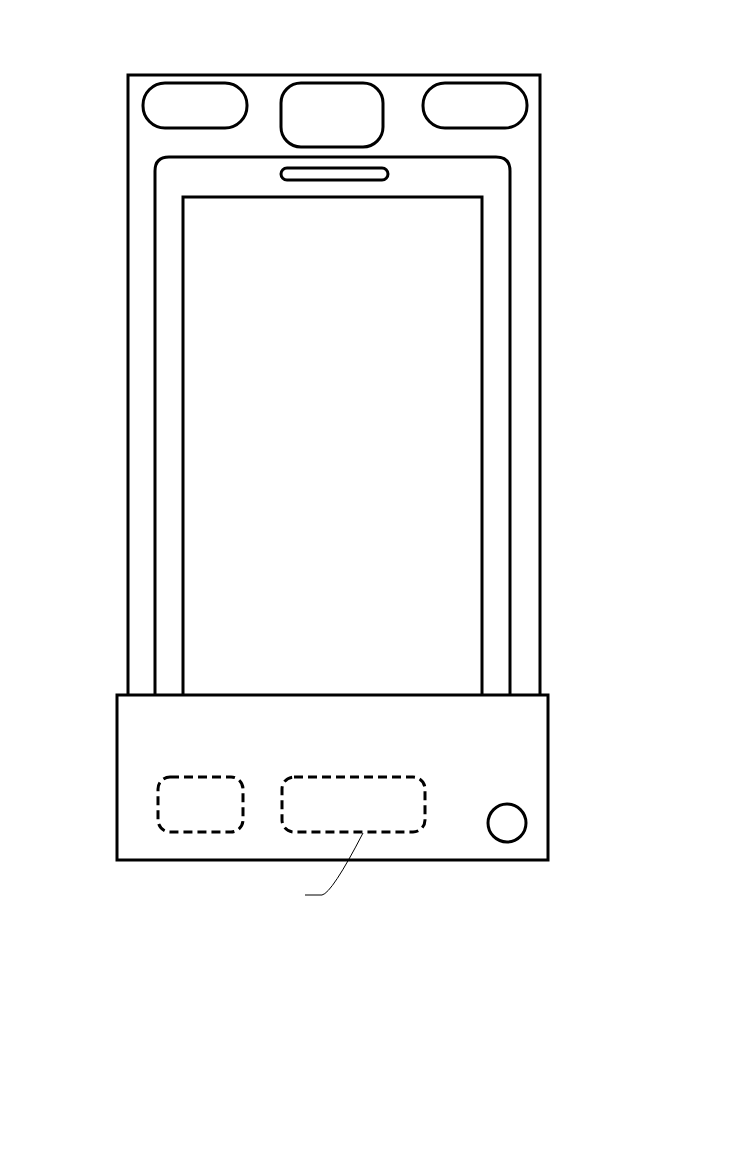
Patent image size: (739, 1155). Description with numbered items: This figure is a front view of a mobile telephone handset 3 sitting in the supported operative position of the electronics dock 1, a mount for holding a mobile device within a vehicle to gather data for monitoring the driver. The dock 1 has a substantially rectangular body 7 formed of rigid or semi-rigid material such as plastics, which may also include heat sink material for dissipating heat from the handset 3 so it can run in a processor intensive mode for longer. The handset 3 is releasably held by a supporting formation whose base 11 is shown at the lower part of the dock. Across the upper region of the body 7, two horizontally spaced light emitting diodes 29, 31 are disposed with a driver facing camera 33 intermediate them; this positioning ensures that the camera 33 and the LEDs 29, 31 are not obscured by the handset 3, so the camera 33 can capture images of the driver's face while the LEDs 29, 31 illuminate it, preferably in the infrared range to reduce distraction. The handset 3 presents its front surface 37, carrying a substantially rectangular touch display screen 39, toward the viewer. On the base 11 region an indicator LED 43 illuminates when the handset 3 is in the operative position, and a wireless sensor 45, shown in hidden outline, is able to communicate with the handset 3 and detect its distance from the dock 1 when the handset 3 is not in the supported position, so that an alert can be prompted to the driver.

The electronics dock 1 is at (127, 128).
The mobile telephone handset 3 is at (500, 182).
The body 7 is at (532, 90).
The base 11 is at (135, 772).
The light emitting diode 29 is at (198, 93).
The light emitting diode 31 is at (465, 95).
The driver facing camera 33 is at (335, 93).
The front surface 37 is at (495, 337).
The touch display screen 39 is at (192, 365).
The indicator LED 43 is at (508, 825).
The wireless sensor 45 is at (211, 828).